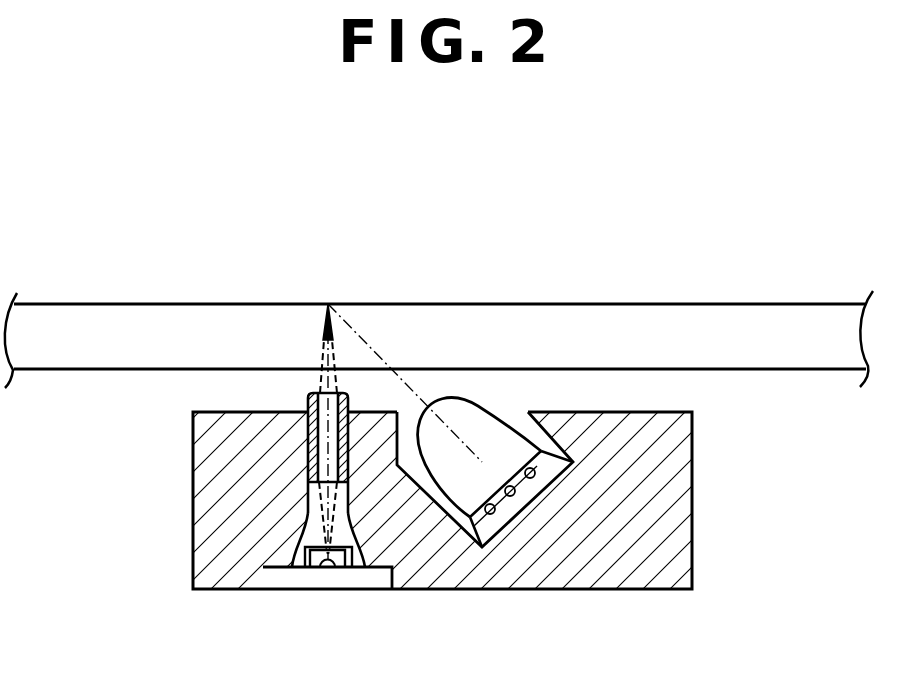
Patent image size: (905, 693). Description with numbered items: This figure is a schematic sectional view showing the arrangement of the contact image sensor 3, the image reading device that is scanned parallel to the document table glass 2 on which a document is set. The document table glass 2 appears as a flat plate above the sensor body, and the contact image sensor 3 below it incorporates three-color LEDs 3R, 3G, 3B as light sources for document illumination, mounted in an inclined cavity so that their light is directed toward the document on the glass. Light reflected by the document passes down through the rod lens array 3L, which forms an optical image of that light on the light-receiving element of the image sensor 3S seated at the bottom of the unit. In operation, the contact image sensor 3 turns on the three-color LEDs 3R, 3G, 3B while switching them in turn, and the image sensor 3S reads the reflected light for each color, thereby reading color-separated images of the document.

The document table glass 2 is at (502, 334).
The contact image sensor 3 is at (681, 502).
The rod lens array 3L is at (318, 453).
The image sensor 3S is at (325, 569).
The red LED 3R is at (490, 515).
The green LED 3G is at (511, 497).
The blue LED 3B is at (532, 477).